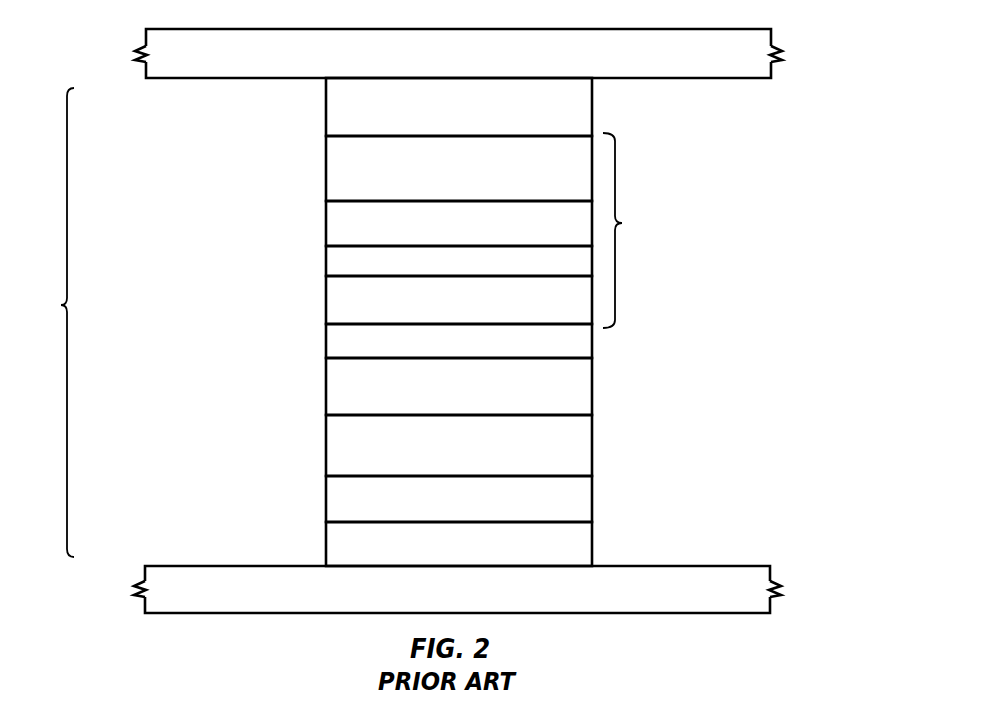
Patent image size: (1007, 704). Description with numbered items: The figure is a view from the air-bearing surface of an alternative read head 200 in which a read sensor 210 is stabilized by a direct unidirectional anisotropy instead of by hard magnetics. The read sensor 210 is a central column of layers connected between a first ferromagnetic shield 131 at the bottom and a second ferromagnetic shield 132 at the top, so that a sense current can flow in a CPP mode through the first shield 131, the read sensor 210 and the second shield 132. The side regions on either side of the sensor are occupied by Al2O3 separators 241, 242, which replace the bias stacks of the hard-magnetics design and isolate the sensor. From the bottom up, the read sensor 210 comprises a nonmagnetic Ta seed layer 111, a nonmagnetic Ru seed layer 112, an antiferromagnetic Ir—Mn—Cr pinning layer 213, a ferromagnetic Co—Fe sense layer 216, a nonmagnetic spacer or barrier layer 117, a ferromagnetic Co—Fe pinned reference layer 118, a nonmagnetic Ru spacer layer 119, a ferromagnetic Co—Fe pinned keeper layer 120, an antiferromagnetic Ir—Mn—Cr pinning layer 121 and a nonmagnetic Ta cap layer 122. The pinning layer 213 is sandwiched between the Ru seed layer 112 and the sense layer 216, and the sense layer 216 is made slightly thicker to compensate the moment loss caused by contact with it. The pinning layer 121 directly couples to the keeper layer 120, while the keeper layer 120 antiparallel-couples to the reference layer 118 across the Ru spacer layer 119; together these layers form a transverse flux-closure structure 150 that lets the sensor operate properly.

The read head 200 is at (188, 627).
The read sensor 210 is at (51, 322).
The second ferromagnetic shield 132 is at (458, 53).
The first ferromagnetic shield 131 is at (457, 589).
The nonmagnetic Ta cap layer 122 is at (459, 107).
The antiferromagnetic Ir—Mn—Cr pinning layer 121 is at (459, 168).
The ferromagnetic Co—Fe pinned keeper layer 120 is at (459, 223).
The nonmagnetic Ru spacer layer 119 is at (459, 261).
The ferromagnetic Co—Fe pinned reference layer 118 is at (459, 300).
The nonmagnetic spacer or barrier layer 117 is at (459, 341).
The ferromagnetic Co—Fe sense layer 216 is at (459, 386).
The antiferromagnetic Ir—Mn—Cr pinning layer 213 is at (459, 445).
The nonmagnetic Ru seed layer 112 is at (459, 499).
The nonmagnetic Ta seed layer 111 is at (459, 544).
The transverse flux-closure structure 150 is at (648, 230).
The Al2O3 separator 241 is at (215, 415).
The Al2O3 separator 242 is at (710, 415).